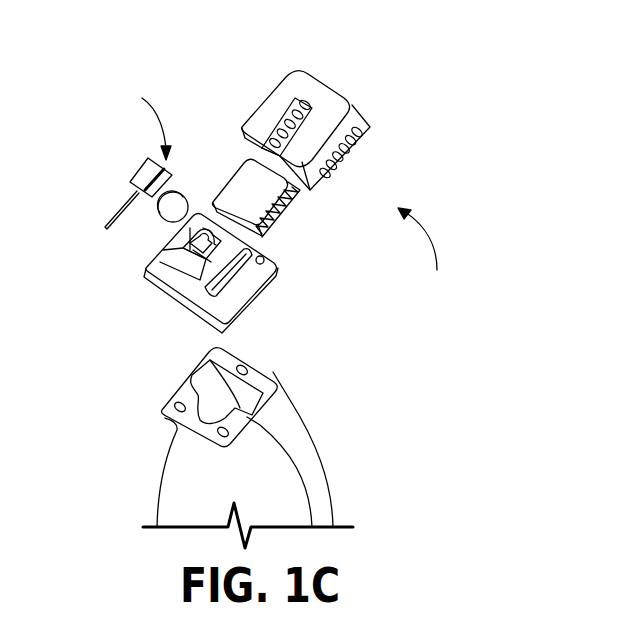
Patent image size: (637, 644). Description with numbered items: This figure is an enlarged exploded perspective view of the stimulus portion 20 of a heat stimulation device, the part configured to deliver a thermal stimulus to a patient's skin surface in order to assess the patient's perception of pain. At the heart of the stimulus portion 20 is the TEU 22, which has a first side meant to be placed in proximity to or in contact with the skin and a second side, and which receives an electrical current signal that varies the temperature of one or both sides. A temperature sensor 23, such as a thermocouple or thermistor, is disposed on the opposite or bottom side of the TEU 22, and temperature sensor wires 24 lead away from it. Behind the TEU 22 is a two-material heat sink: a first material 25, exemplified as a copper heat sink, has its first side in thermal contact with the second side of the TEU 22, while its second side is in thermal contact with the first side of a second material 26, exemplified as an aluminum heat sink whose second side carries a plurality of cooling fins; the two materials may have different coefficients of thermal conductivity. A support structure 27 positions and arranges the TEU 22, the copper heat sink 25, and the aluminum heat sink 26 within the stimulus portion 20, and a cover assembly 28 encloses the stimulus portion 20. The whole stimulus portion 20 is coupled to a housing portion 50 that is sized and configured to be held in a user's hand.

The stimulus portion 20 is at (425, 253).
The TEU 22 is at (130, 182).
The temperature sensor 23 is at (144, 124).
The temperature sensor wires 24 is at (107, 228).
The first material (copper heat sink) 25 is at (178, 200).
The second material (aluminum heat sink) 26 is at (288, 207).
The support structure 27 is at (257, 295).
The cover assembly 28 is at (268, 110).
The housing portion 50 is at (310, 467).